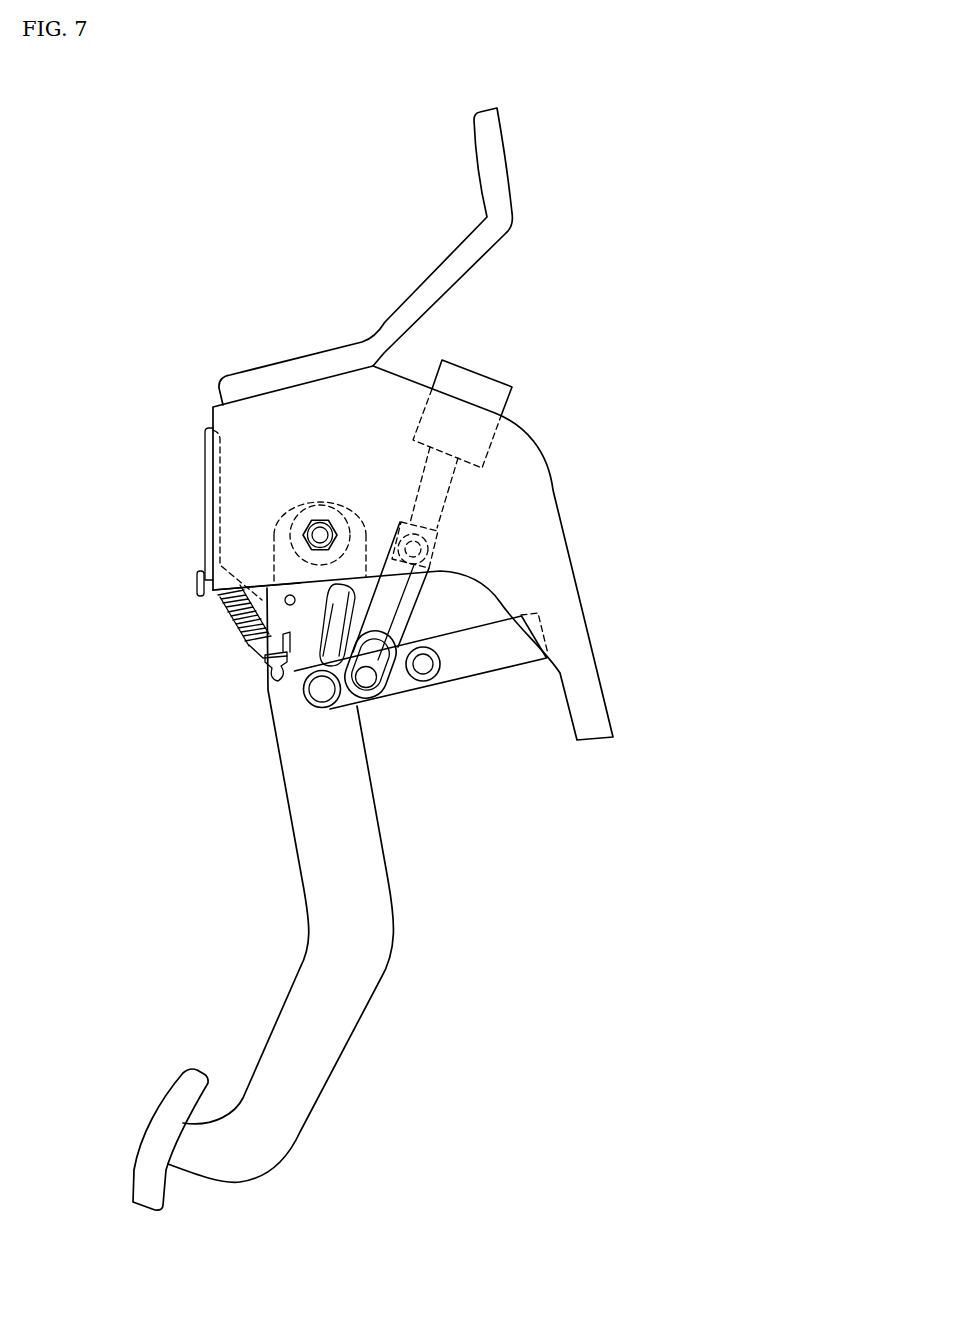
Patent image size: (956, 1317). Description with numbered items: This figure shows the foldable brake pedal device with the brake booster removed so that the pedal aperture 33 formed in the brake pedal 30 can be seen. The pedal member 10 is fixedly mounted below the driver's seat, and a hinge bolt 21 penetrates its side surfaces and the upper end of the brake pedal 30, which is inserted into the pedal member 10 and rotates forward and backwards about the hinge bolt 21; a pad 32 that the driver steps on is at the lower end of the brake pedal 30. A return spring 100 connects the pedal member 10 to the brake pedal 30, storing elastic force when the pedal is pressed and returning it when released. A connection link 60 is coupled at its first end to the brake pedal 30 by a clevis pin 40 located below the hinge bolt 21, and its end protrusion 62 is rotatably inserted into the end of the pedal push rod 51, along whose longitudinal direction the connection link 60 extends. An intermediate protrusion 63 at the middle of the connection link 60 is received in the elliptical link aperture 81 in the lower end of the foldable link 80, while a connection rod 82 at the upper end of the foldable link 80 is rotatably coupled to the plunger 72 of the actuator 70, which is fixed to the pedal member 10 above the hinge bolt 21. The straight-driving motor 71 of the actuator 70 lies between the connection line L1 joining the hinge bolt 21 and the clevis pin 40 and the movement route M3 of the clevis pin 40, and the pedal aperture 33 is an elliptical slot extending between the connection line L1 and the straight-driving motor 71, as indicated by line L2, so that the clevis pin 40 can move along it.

The pedal member 10 is at (544, 447).
The hinge bolt 21 is at (303, 534).
The brake pedal 30 is at (308, 842).
The pad 32 is at (158, 1118).
The pedal aperture 33 is at (315, 581).
The clevis pin 40 is at (307, 703).
The pedal push rod 51 is at (495, 660).
The connection link 60 is at (397, 685).
The end protrusion 62 is at (425, 675).
The intermediate protrusion 63 is at (367, 700).
The actuator 70 is at (556, 414).
The straight-driving motor 71 is at (487, 375).
The plunger 72 is at (437, 497).
The foldable link 80 is at (397, 592).
The link aperture 81 is at (372, 630).
The connection rod 82 is at (413, 549).
The return spring 100 is at (220, 612).
The connection line L1 is at (319, 582).
The line L2 is at (325, 690).
The movement route M3 is at (303, 693).